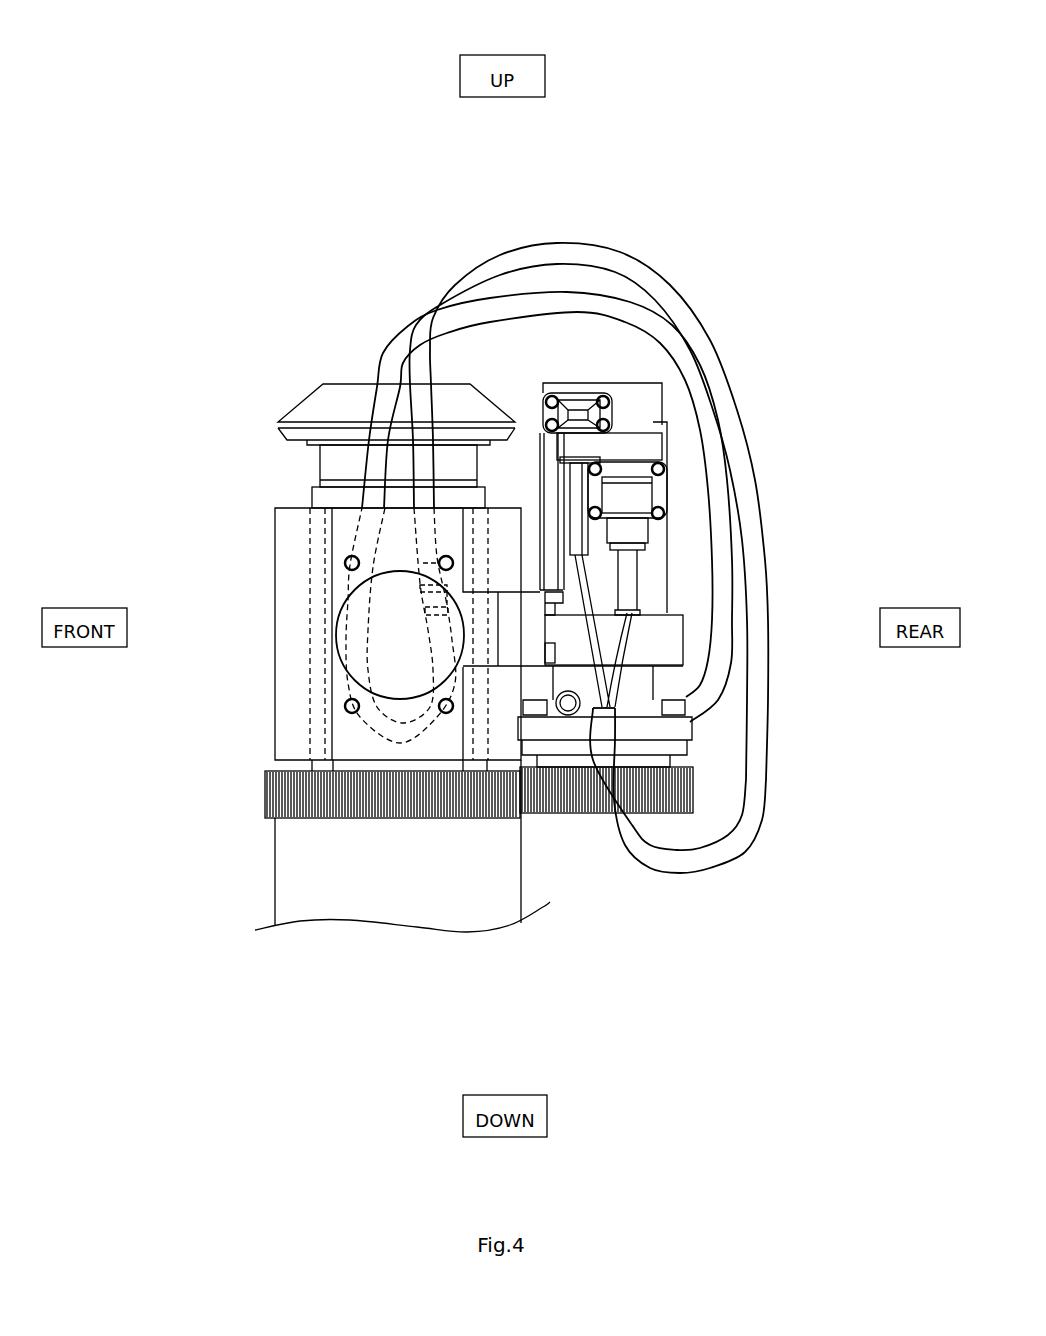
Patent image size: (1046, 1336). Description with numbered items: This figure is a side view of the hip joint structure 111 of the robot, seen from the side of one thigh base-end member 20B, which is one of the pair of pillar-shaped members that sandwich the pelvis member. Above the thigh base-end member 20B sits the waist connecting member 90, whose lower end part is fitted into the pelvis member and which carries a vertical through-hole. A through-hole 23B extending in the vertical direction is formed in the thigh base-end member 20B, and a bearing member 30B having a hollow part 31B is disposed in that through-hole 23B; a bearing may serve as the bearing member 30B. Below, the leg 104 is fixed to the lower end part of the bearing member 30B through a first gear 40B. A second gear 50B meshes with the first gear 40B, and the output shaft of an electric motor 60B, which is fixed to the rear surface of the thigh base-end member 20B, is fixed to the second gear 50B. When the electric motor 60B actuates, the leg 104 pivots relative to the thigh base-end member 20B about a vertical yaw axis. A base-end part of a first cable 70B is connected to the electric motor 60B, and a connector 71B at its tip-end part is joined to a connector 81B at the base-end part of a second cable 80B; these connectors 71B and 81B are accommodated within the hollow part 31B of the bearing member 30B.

The hip joint structure 111 is at (518, 30).
The waist connecting member 90 is at (325, 407).
The bearing member 30B is at (312, 497).
The thigh base-end member 20B is at (275, 711).
The hollow part 31B is at (325, 535).
The through-hole 23B is at (307, 658).
The connector 81B is at (358, 576).
The connector 71B is at (420, 595).
The first gear 40B is at (292, 792).
The second gear 50B is at (673, 796).
The leg 104 is at (295, 851).
The electric motor 60B is at (652, 558).
The second cable 80B is at (670, 309).
The first cable 70B is at (705, 858).